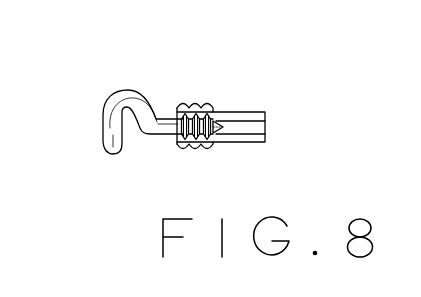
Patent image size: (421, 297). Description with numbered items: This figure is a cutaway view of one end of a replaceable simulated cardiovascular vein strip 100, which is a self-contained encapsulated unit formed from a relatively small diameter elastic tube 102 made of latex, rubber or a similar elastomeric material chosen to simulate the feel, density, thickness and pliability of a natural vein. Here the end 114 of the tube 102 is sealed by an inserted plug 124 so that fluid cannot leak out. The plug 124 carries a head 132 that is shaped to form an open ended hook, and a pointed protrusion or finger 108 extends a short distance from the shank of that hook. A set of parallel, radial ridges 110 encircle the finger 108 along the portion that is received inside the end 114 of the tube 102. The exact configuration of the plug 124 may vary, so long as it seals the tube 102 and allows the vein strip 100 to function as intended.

The simulated cardiovascular vein strip 100 is at (216, 88).
The elastic tube 102 is at (248, 138).
The finger 108 is at (217, 118).
The radial ridges 110 is at (196, 147).
The end 114 is at (177, 106).
The plug 124 is at (85, 120).
The head 132 is at (115, 103).